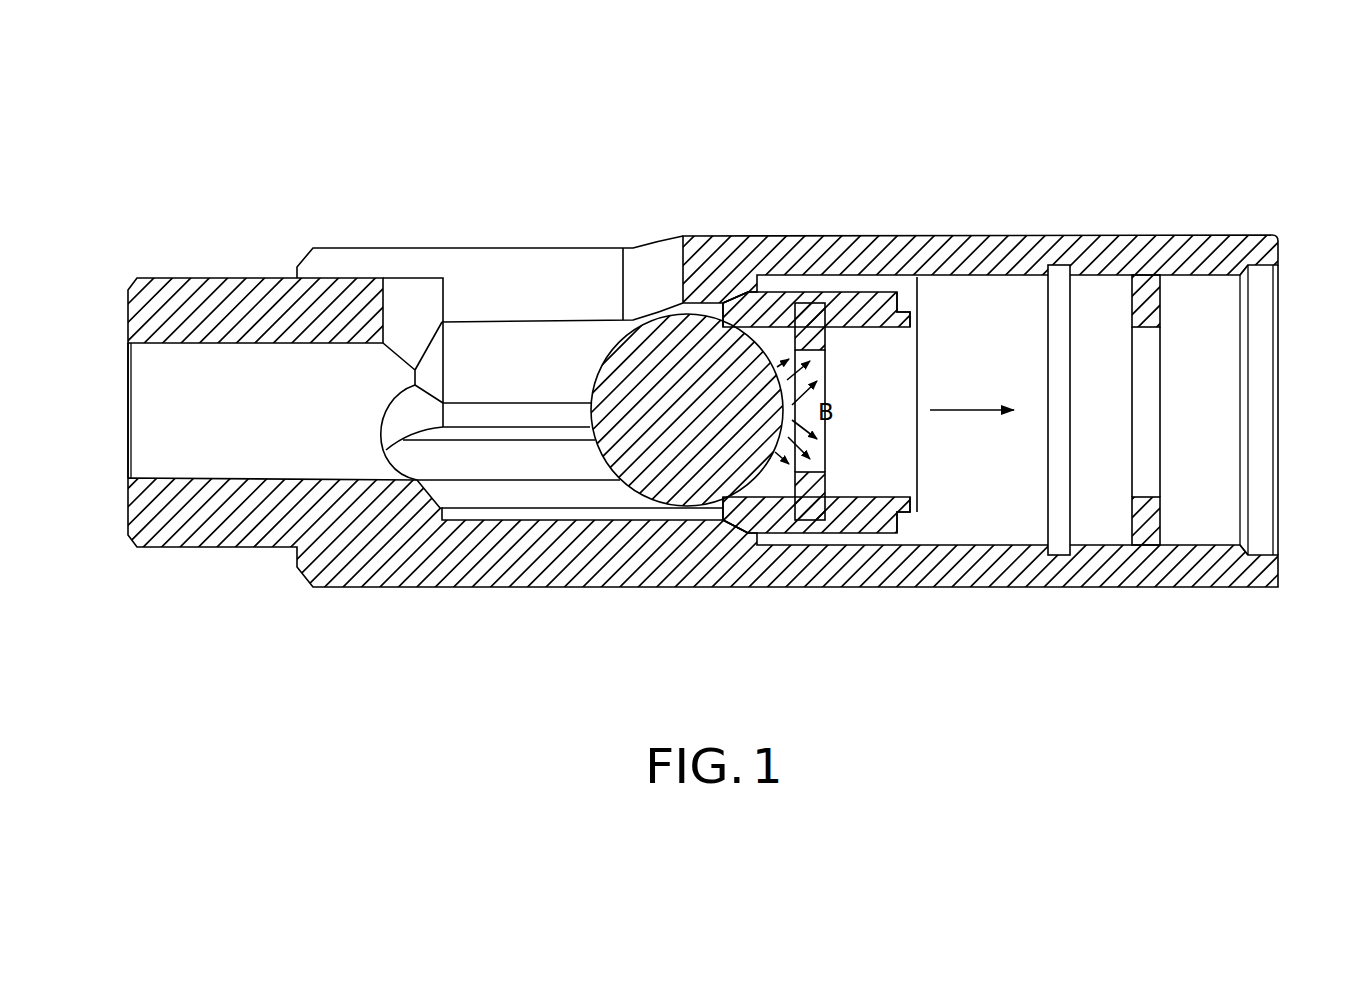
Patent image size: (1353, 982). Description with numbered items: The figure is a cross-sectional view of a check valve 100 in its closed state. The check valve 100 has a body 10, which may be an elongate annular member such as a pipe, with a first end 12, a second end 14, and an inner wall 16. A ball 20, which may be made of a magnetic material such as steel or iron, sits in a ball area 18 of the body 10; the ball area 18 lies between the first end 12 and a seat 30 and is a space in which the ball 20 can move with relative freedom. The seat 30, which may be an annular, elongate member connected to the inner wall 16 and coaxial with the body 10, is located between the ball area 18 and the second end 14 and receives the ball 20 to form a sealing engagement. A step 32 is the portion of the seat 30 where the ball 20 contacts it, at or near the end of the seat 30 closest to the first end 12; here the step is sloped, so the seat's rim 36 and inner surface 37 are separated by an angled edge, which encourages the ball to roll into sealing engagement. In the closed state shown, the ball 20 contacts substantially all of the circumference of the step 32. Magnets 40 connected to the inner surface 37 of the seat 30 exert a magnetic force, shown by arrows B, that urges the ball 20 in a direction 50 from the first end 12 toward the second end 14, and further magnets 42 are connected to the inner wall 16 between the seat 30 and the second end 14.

The check valve 100 is at (146, 130).
The body 10 is at (512, 560).
The first end 12 is at (128, 418).
The second end 14 is at (1280, 380).
The inner wall 16 is at (168, 345).
The ball area 18 is at (512, 375).
The ball 20 is at (633, 373).
The seat 30 is at (782, 303).
The step 32 is at (763, 298).
The rim 36 is at (728, 325).
The inner surface 37 is at (887, 327).
The magnets 40 is at (827, 305).
The magnets 42 is at (1147, 297).
The direction 50 is at (970, 412).